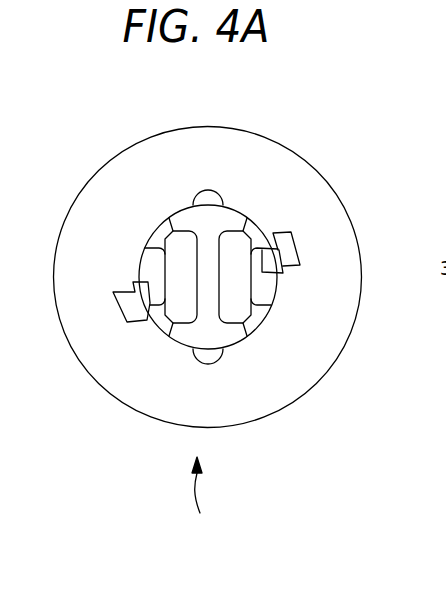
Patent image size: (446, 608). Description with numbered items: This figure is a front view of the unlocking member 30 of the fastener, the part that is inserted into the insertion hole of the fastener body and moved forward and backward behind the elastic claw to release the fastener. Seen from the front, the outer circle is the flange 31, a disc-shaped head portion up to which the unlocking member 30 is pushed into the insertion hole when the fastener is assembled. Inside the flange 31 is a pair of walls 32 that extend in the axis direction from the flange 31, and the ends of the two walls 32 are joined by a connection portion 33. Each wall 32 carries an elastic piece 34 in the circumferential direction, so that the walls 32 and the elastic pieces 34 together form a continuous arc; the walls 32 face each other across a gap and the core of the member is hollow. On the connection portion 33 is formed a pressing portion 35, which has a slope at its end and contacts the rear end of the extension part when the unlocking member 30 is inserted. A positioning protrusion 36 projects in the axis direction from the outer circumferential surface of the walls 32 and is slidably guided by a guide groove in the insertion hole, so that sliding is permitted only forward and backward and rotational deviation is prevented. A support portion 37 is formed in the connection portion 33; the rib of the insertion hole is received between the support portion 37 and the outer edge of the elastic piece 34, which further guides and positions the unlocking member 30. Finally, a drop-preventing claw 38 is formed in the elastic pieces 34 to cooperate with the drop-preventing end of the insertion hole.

The unlocking member 30 is at (197, 498).
The flange 31 is at (103, 166).
The walls 32 is at (237, 202).
The connection portion 33 is at (247, 287).
The elastic piece 34 is at (283, 272).
The pressing portion 35 is at (210, 300).
The positioning protrusion 36 is at (216, 190).
The support portion 37 is at (270, 309).
The drop-preventing claw 38 is at (122, 312).